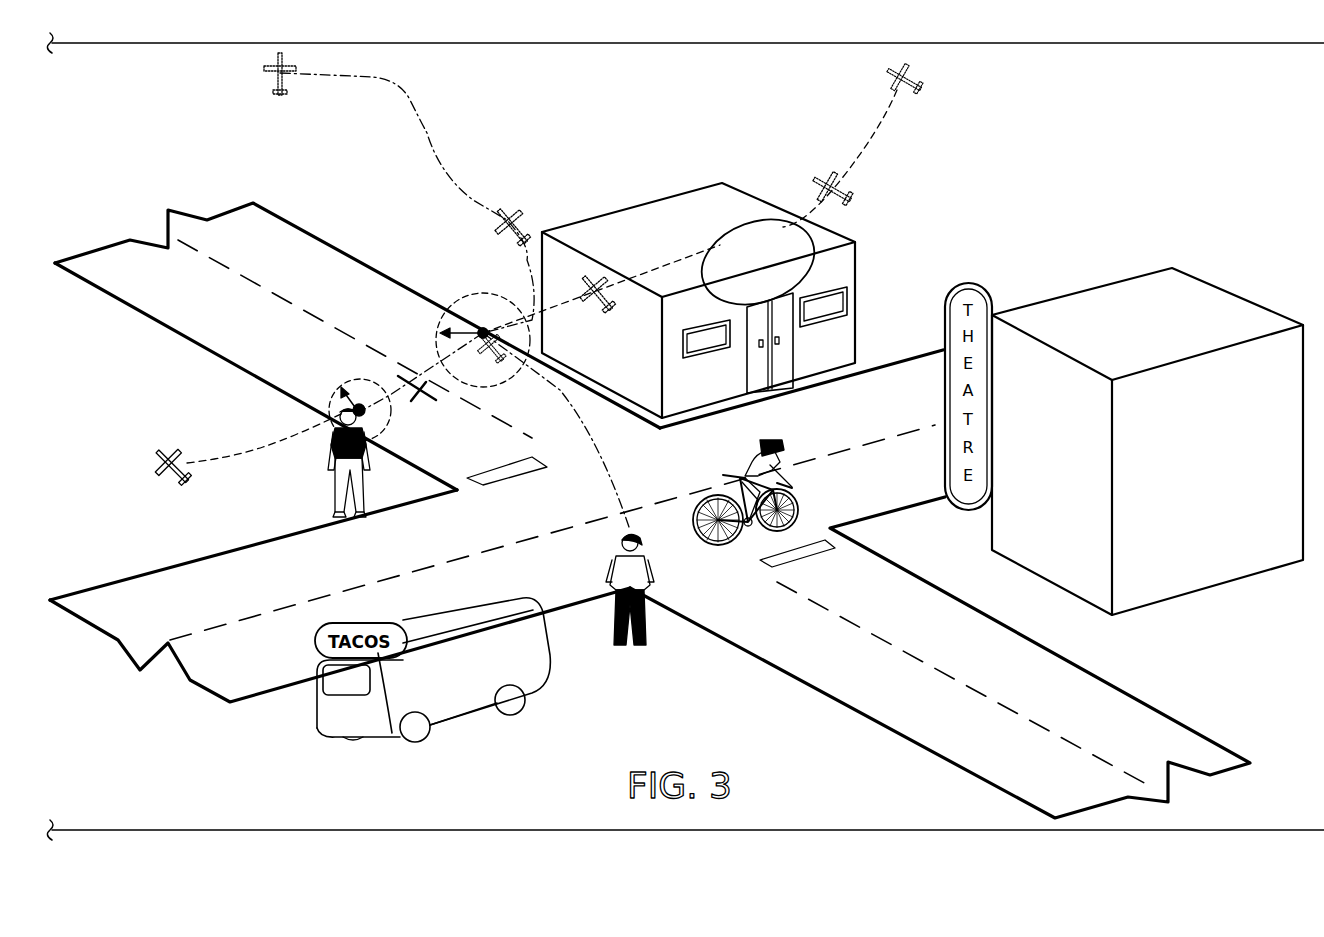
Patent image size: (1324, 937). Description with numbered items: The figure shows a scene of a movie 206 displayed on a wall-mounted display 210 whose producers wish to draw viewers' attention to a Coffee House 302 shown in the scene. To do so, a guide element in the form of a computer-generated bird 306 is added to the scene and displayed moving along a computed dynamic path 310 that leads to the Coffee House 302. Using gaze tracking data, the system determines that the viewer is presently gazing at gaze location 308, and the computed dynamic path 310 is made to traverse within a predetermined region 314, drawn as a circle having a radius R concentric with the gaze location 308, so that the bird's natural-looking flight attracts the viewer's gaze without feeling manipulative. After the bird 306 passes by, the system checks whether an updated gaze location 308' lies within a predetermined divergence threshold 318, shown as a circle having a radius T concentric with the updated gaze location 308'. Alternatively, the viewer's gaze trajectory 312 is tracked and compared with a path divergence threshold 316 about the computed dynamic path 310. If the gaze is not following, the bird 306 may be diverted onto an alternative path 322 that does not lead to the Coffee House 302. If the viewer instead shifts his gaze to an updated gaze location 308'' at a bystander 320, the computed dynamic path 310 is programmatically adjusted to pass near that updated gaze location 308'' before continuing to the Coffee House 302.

The movie 206 is at (147, 143).
The wall-mounted display 210 is at (1281, 81).
The Coffee House 302 is at (720, 242).
The bird 306 is at (277, 92).
The gaze location 308 is at (369, 460).
The updated gaze location 308' is at (449, 308).
The updated gaze location 308'' is at (652, 562).
The computed dynamic path 310 is at (233, 467).
The gaze trajectory 312 is at (573, 425).
The predetermined region 314 is at (330, 432).
The path divergence threshold 316 is at (407, 393).
The predetermined divergence threshold 318 is at (470, 296).
The bystander 320 is at (647, 628).
The alternative path 322 is at (427, 125).
The radius T is at (445, 325).
The radius R is at (330, 402).